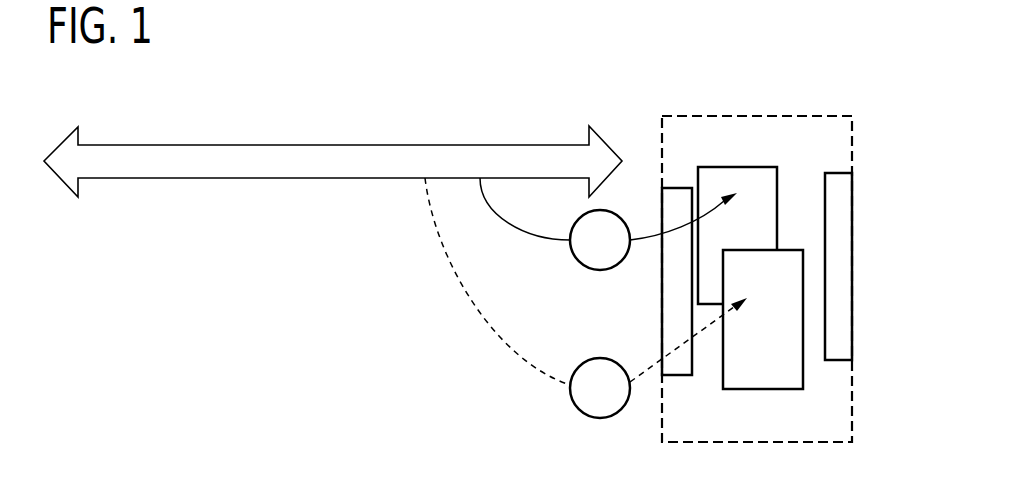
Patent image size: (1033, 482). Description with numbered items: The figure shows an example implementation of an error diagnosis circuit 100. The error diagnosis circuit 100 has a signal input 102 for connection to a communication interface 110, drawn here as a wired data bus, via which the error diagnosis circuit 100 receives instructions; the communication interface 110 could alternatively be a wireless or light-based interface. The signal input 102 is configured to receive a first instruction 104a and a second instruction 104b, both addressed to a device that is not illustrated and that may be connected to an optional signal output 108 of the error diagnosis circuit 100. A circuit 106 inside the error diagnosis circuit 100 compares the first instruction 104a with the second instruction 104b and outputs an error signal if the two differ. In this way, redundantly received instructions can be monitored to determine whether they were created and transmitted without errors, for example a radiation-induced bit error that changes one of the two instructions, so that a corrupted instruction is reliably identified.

The error diagnosis circuit 100 is at (807, 115).
The signal input 102 is at (664, 308).
The first instruction 104a is at (597, 270).
The second instruction 104b is at (600, 418).
The circuit 106 is at (722, 166).
The signal output 108 is at (843, 267).
The communication interface 110 is at (333, 145).